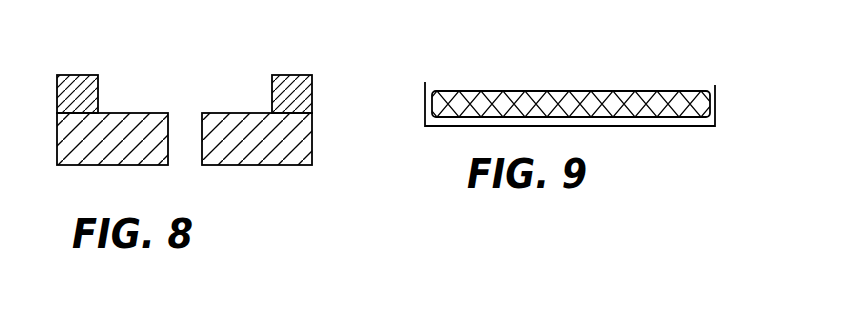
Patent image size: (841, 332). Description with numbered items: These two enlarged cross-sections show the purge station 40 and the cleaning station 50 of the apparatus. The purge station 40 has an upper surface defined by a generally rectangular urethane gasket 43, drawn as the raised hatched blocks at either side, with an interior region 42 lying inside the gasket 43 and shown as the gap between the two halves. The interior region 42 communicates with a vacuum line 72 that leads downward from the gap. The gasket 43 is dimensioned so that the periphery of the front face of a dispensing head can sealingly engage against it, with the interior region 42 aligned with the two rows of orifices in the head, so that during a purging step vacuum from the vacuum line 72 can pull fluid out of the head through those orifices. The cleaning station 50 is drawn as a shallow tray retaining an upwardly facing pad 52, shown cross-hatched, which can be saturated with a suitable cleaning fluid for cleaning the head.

In FIG. 8, the purge station 40 is at (251, 187).
In FIG. 8, the interior region 42 is at (180, 95).
In FIG. 8, the urethane gasket 43 is at (72, 76).
In FIG. 8, the vacuum line 72 is at (179, 150).
In FIG. 9, the cleaning station 50 is at (717, 108).
In FIG. 9, the pad 52 is at (650, 92).